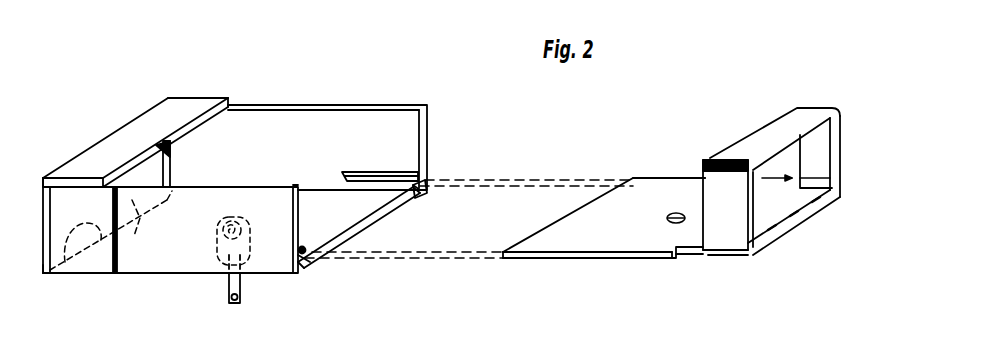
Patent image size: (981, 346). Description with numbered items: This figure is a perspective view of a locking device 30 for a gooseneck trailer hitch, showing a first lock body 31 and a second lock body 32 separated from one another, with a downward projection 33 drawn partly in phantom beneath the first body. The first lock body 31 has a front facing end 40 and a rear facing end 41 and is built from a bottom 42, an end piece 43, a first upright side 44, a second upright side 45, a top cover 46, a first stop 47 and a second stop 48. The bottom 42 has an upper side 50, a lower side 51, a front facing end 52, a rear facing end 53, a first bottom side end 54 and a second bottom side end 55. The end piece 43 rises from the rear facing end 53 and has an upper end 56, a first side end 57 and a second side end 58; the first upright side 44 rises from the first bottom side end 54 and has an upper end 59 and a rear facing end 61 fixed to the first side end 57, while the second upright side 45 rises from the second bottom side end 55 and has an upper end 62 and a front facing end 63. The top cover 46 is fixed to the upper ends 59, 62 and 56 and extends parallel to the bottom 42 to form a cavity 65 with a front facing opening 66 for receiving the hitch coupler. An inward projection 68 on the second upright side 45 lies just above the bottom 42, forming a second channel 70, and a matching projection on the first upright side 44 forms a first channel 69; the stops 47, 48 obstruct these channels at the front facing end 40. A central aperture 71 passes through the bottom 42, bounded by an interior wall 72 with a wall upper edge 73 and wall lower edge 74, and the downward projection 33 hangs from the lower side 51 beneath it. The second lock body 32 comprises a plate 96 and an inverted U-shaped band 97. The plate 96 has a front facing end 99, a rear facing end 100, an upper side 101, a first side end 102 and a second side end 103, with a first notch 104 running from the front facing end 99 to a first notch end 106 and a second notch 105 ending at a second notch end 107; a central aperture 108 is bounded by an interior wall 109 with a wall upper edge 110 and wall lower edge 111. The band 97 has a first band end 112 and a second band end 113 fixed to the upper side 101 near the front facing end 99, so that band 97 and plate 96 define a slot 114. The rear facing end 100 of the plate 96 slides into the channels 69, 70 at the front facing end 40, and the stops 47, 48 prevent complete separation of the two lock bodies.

The locking device 30 is at (549, 127).
The first lock body 31 is at (326, 76).
The second lock body 32 is at (733, 98).
The downward projection 33 is at (230, 282).
The front facing end 40 is at (408, 206).
The rear facing end 41 is at (114, 132).
The bottom 42 is at (360, 158).
The end piece 43 is at (143, 218).
The first upright side 44 is at (118, 273).
The second upright side 45 is at (353, 120).
The top cover 46 is at (180, 98).
The first stop 47 is at (312, 258).
The second stop 48 is at (420, 183).
The upper side 50 is at (353, 222).
The lower side 51 is at (392, 220).
The front facing end 52 is at (414, 198).
The rear facing end 53 is at (108, 235).
The first bottom side end 54 is at (302, 272).
The second bottom side end 55 is at (314, 188).
The upper end 56 is at (42, 179).
The first side end 57 is at (48, 204).
The second side end 58 is at (171, 153).
The upper end 59 is at (288, 186).
The rear facing end 61 is at (43, 273).
The upper end 62 is at (283, 106).
The front facing end 63 is at (426, 130).
The cavity 65 is at (214, 168).
The front facing opening 66 is at (213, 137).
The inward projection 68 is at (372, 176).
The first channel 69 is at (301, 247).
The second channel 70 is at (348, 190).
The aperture 71 is at (250, 236).
The interior wall 72 is at (230, 216).
The wall upper edge 73 is at (247, 220).
The wall lower edge 74 is at (217, 240).
The plate 96 is at (640, 180).
The band 97 is at (752, 140).
The front facing end 99 is at (754, 250).
The rear facing end 100 is at (542, 232).
The upper side 101 is at (574, 260).
The first side end 102 is at (566, 259).
The second side end 103 is at (650, 180).
The first notch 104 is at (712, 260).
The second notch 105 is at (797, 162).
The first notch end 106 is at (669, 262).
The second notch end 107 is at (794, 182).
The aperture 108 is at (664, 222).
The interior wall 109 is at (686, 194).
The wall upper edge 110 is at (690, 224).
The wall lower edge 111 is at (666, 212).
The first band end 112 is at (745, 252).
The second band end 113 is at (832, 200).
The slot 114 is at (842, 108).